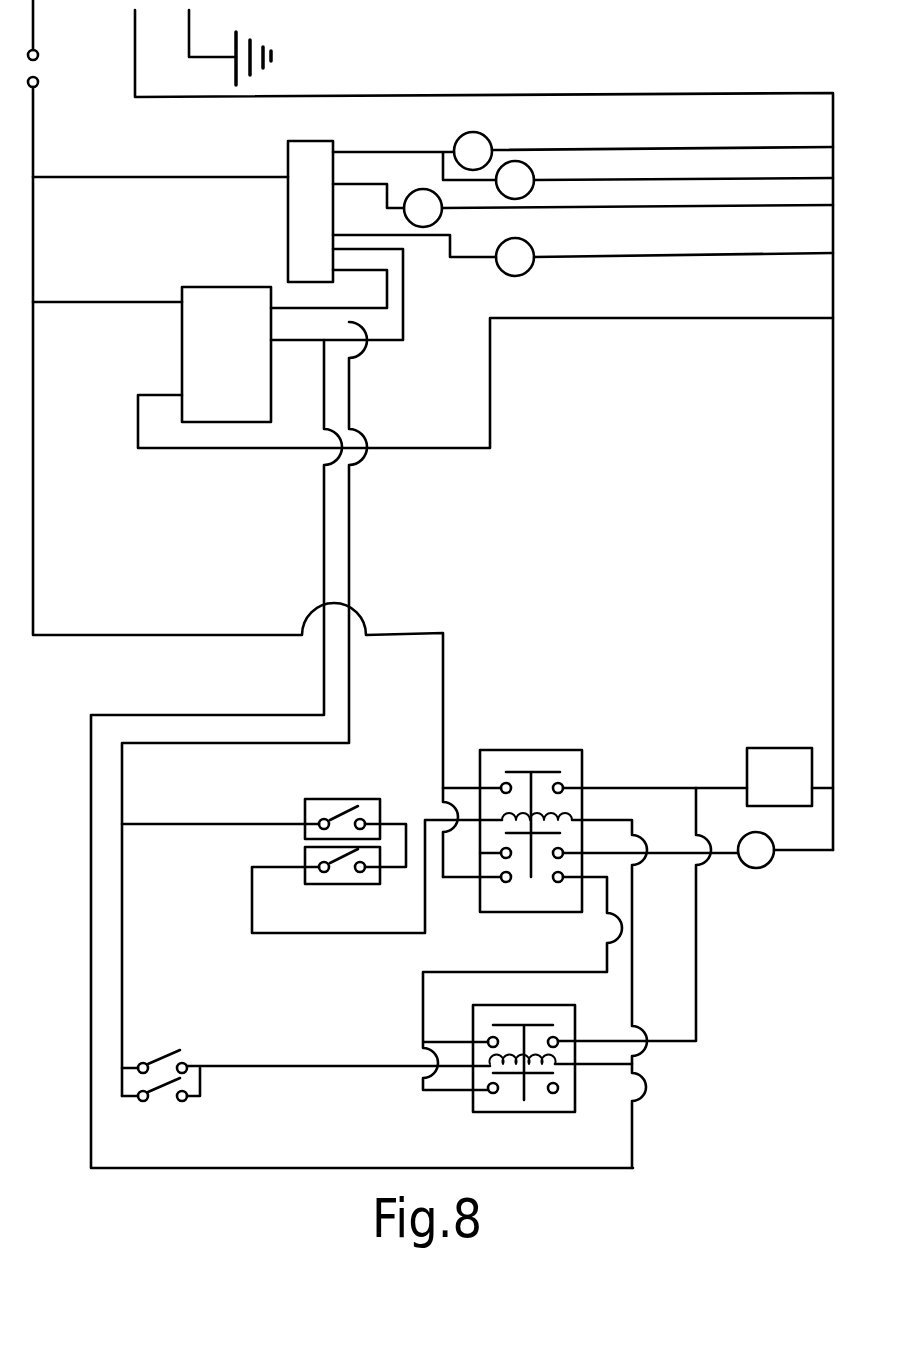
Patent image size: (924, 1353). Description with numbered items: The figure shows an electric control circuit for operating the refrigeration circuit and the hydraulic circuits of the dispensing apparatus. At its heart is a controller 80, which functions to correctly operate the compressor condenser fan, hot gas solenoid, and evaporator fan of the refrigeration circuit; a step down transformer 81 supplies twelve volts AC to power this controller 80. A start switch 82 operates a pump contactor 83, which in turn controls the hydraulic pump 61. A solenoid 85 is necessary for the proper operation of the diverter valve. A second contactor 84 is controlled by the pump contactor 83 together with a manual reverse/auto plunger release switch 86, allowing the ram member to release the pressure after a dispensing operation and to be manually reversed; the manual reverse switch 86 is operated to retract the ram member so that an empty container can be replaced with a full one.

The controller 80 is at (297, 212).
The step down transformer 81 is at (200, 348).
The start switch 82 is at (305, 812).
The pump contactor 83 is at (530, 760).
The contactor 84 is at (548, 1103).
The solenoid 85 is at (762, 858).
The hydraulic pump 61 is at (762, 752).
The manual reverse/auto plunger release switch 86 is at (218, 1047).